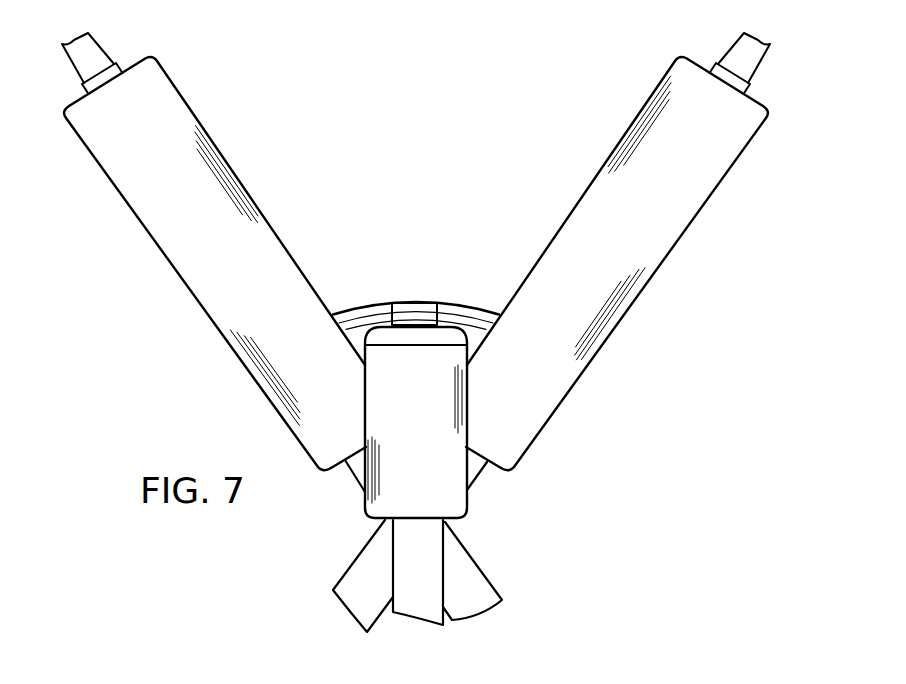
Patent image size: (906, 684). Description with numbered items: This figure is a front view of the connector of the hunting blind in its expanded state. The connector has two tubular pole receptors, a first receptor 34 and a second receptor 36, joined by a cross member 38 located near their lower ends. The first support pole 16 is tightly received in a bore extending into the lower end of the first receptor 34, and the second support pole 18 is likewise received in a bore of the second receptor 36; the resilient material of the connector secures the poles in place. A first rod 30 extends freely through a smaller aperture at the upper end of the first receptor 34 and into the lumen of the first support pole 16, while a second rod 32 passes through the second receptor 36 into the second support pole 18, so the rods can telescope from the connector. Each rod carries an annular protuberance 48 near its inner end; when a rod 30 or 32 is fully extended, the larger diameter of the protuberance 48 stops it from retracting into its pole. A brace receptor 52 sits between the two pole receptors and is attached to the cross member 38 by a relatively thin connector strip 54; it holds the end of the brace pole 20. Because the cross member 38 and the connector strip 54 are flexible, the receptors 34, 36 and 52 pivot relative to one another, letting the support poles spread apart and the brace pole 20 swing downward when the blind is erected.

The first support pole 16 is at (377, 567).
The second support pole 18 is at (470, 587).
The brace pole 20 is at (423, 610).
The first rod 30 is at (743, 44).
The second rod 32 is at (90, 45).
The first receptor 34 is at (657, 245).
The second receptor 36 is at (173, 243).
The cross member 38 is at (373, 312).
The annular protuberance 48 is at (92, 84).
The brace receptor 52 is at (455, 500).
The connector strip 54 is at (413, 315).